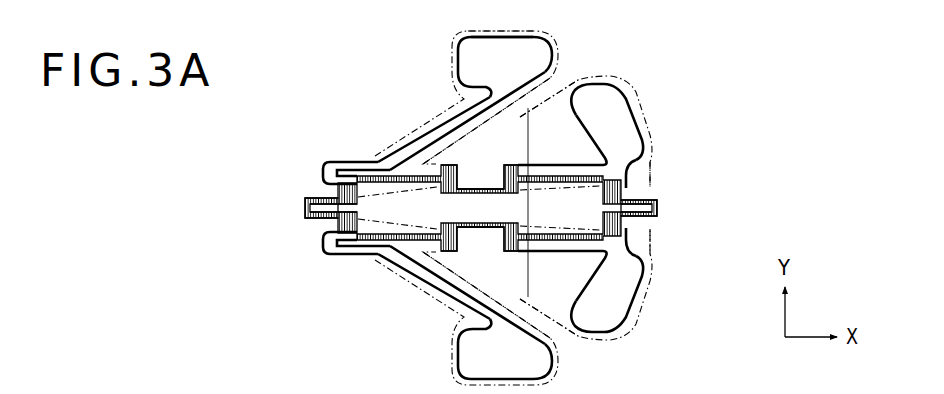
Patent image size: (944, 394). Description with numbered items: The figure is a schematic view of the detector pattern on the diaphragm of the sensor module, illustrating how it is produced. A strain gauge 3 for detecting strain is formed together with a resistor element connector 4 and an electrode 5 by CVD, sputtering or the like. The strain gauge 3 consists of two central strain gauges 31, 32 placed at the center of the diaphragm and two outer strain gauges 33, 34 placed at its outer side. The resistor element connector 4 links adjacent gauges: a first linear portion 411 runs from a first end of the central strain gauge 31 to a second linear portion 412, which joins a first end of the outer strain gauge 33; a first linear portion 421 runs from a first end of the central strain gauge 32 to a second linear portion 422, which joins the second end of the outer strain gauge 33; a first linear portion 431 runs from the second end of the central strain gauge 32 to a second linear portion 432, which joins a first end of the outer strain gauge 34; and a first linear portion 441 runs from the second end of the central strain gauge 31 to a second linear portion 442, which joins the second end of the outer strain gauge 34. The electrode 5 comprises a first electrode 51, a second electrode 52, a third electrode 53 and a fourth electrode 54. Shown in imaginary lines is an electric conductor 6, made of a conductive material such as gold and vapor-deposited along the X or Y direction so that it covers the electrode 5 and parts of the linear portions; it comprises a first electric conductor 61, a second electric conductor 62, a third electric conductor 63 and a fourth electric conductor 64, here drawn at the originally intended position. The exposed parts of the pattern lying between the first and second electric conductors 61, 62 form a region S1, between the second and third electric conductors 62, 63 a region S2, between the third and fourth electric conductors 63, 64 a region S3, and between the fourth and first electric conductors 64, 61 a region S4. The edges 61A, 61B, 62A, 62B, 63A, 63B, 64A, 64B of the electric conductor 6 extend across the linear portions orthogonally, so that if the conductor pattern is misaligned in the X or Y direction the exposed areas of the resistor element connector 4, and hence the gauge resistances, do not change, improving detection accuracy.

The strain gauge 3 is at (282, 201).
The central strain gauge 31 is at (493, 188).
The central strain gauge 32 is at (482, 229).
The outer strain gauge 33 is at (307, 208).
The outer strain gauge 34 is at (658, 207).
The resistor element connector 4 is at (488, 206).
The first linear portion 411 is at (440, 164).
The second linear portion 412 is at (330, 177).
The first linear portion 421 is at (448, 257).
The second linear portion 422 is at (337, 224).
The first linear portion 431 is at (545, 240).
The second linear portion 432 is at (627, 222).
The first linear portion 441 is at (548, 163).
The second linear portion 442 is at (638, 152).
The electrode 5 is at (546, 38).
The first electrode 51 is at (478, 52).
The second electrode 52 is at (473, 361).
The third electrode 53 is at (595, 318).
The fourth electrode 54 is at (613, 108).
The electric conductor 6 is at (500, 32).
The first electric conductor 61 is at (447, 110).
The edge 61A is at (433, 152).
The edge 61B is at (345, 181).
The second electric conductor 62 is at (467, 317).
The edge 62A is at (460, 226).
The edge 62B is at (356, 254).
The third electric conductor 63 is at (635, 305).
The edge 63A is at (465, 270).
The edge 63B is at (597, 240).
The fourth electric conductor 64 is at (647, 123).
The edge 64A is at (530, 160).
The edge 64B is at (650, 180).
The exposed region S1 is at (307, 198).
The exposed region S2 is at (455, 250).
The exposed region S3 is at (658, 212).
The exposed region S4 is at (514, 162).